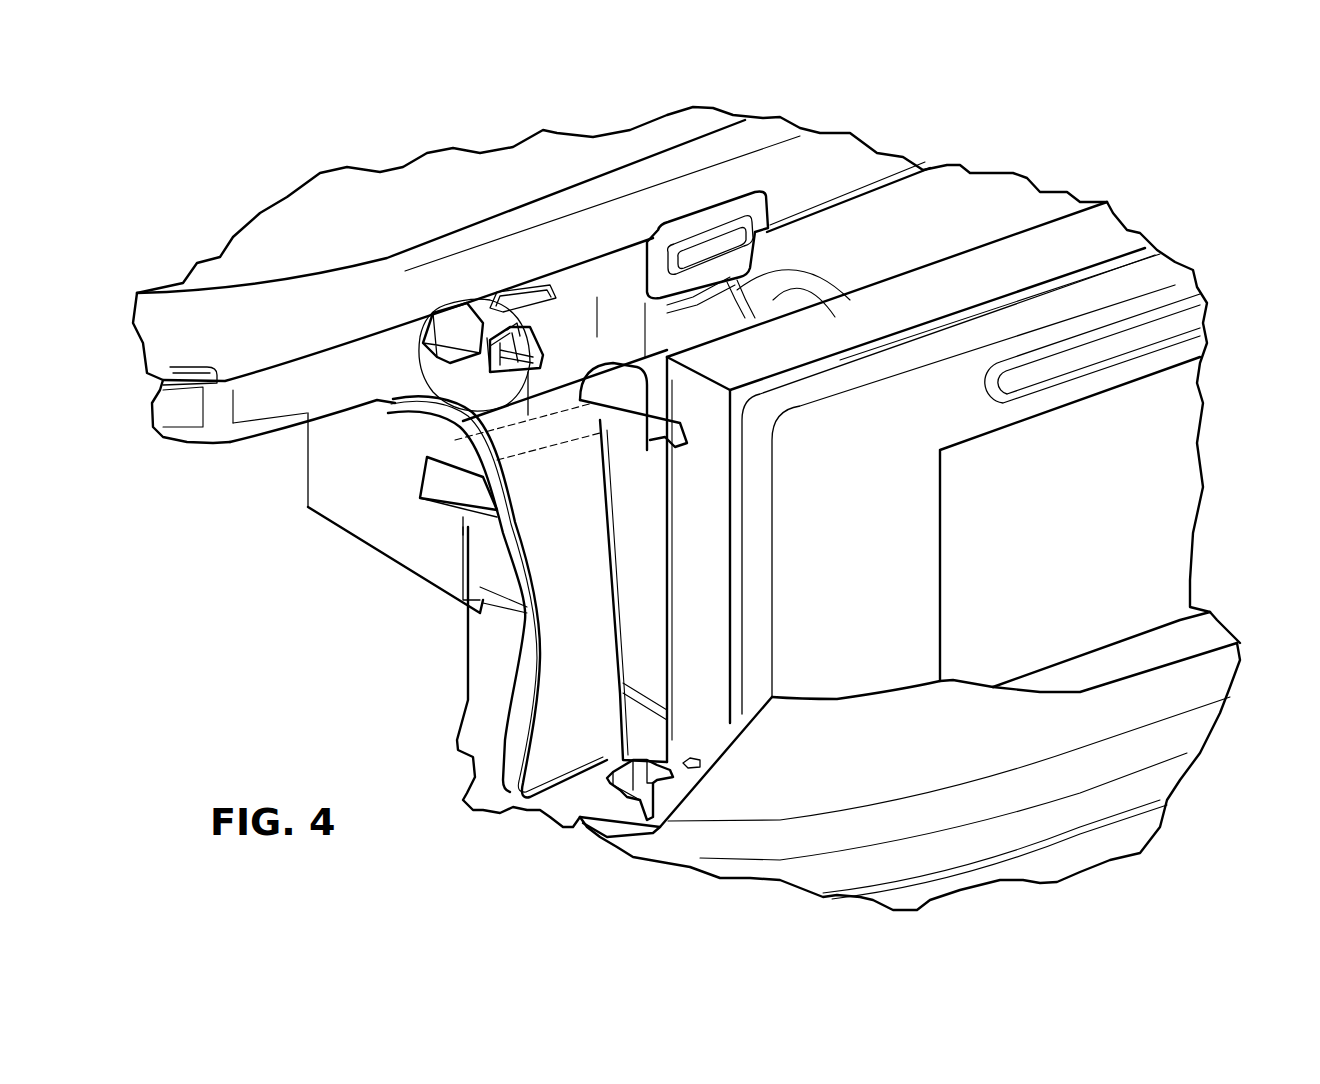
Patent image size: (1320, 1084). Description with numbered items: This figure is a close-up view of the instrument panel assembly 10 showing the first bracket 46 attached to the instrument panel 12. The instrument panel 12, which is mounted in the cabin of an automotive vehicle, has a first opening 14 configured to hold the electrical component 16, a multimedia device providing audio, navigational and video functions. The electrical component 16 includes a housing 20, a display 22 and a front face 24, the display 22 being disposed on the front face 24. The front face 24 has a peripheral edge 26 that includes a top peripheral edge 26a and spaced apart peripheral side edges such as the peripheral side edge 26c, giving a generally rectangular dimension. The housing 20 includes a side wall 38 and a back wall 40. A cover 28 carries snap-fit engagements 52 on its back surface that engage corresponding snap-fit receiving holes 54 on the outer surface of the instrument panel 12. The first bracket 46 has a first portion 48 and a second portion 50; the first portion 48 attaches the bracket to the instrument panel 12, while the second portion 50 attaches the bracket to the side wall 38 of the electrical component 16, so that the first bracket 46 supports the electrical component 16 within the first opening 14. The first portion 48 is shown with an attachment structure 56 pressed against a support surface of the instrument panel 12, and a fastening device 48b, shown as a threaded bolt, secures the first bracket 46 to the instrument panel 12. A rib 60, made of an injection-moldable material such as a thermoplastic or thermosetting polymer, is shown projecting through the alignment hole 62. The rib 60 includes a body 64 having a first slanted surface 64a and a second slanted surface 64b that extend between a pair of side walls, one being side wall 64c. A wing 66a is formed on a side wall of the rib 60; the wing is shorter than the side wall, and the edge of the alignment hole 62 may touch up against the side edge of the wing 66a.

The instrument panel assembly 10 is at (1033, 152).
The instrument panel 12 is at (259, 464).
The first opening 14 is at (597, 417).
The electrical component 16 is at (1097, 187).
The housing 20 is at (367, 603).
The display 22 is at (1024, 560).
The front face 24 is at (1158, 476).
The peripheral edge 26 is at (913, 292).
The top peripheral edge 26a is at (1006, 289).
The peripheral side edge 26c is at (714, 549).
The cover 28 is at (1117, 833).
The side wall 38 is at (418, 560).
The back wall 40 is at (308, 483).
The first bracket 46 is at (629, 505).
The first portion 48 is at (405, 357).
The fastening device 48b is at (452, 330).
The second portion 50 is at (635, 553).
The snap-fit engagements 52 is at (607, 787).
The snap-fit receiving holes 54 is at (692, 238).
The attachment structure 56 is at (420, 412).
The rib 60 is at (550, 358).
The alignment hole 62 is at (511, 370).
The body 64 is at (500, 339).
The first slanted surface 64a is at (518, 337).
The second slanted surface 64b is at (528, 347).
The side wall 64c is at (490, 323).
The wing 66a is at (490, 357).